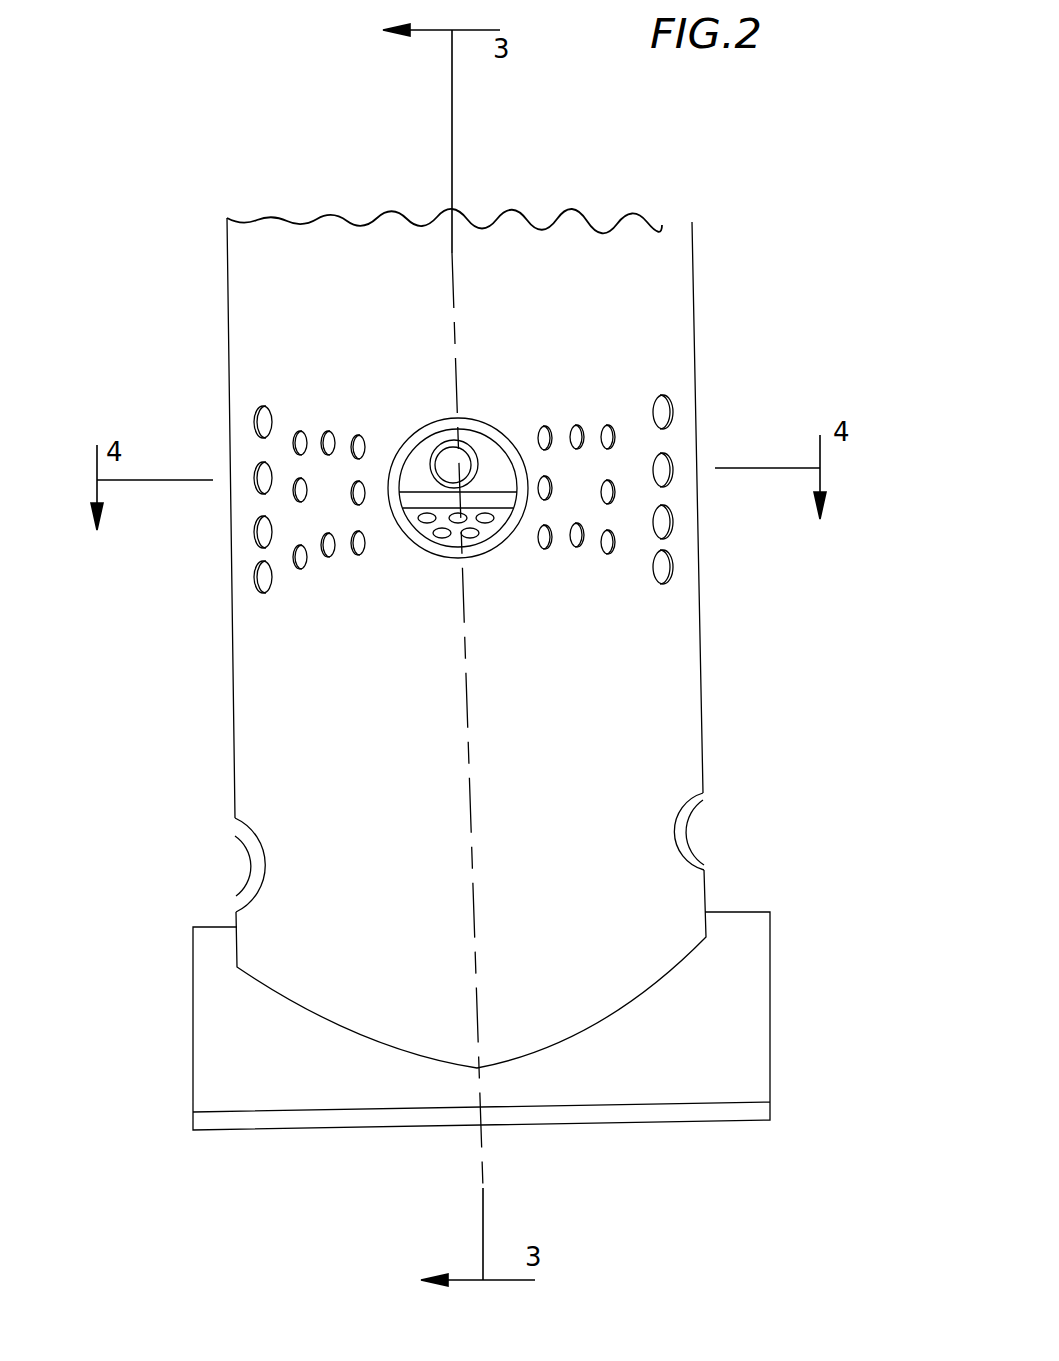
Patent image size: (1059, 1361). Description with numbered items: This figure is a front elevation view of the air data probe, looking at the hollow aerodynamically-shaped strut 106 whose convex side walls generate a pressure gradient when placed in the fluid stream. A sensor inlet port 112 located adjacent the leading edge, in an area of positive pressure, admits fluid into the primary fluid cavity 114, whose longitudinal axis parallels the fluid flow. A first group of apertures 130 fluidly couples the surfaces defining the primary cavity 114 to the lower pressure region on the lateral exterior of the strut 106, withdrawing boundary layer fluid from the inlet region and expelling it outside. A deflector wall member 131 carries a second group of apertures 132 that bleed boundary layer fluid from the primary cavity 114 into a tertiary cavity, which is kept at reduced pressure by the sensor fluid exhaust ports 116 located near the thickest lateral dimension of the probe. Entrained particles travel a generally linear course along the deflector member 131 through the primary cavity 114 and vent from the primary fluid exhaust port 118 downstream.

The strut 106 is at (232, 740).
The sensor inlet port 112 is at (485, 423).
The primary fluid cavity 114 is at (490, 455).
The sensor fluid exhaust ports 116 is at (220, 867).
The primary fluid exhaust port 118 is at (454, 464).
The first group of apertures 130 is at (670, 458).
The deflector wall member 131 is at (490, 540).
The second group of apertures 132 is at (470, 538).